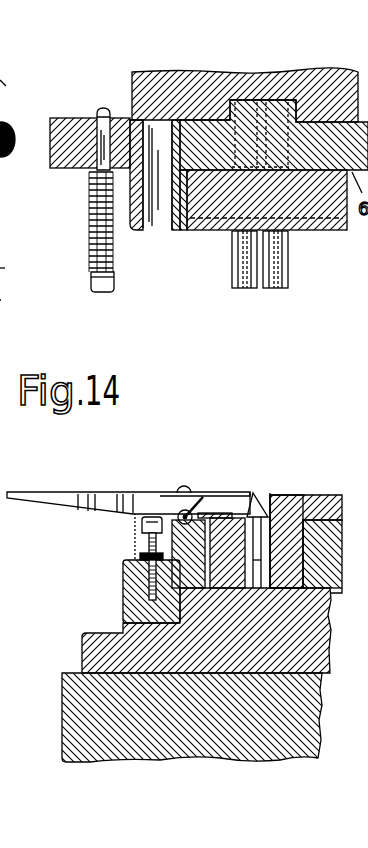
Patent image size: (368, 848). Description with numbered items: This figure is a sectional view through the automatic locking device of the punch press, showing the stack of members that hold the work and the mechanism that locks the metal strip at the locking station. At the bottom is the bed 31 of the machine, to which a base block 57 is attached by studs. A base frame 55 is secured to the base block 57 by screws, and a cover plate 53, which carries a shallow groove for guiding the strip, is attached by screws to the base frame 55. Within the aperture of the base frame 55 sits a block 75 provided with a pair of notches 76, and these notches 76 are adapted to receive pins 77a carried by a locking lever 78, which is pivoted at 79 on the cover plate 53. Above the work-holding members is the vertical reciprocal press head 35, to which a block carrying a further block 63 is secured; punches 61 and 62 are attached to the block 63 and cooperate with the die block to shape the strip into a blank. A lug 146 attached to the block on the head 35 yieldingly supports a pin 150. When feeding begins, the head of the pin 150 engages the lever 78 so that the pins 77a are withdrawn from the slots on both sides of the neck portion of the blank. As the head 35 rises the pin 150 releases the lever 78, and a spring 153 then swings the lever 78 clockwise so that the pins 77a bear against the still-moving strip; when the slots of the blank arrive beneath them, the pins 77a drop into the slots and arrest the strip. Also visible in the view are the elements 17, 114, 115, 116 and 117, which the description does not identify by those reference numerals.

The member 17 is at (11, 73).
The member 115 is at (25, 97).
The arm 114 is at (13, 215).
The member 117 is at (19, 269).
The member 116 is at (18, 295).
The lug 146 is at (72, 128).
The press head 35 is at (338, 52).
The block 63 is at (200, 217).
The punch 62 is at (233, 257).
The punch 61 is at (290, 262).
The pin 150 is at (110, 286).
The locking lever 78 is at (37, 492).
The pivot 79 is at (198, 498).
The pins 77a is at (253, 493).
The block 75 is at (283, 527).
The cover plate 53 is at (338, 476).
The base frame 55 is at (337, 542).
The notches 76 is at (265, 555).
The spring 153 is at (135, 528).
The base block 57 is at (97, 642).
The bed 31 is at (77, 721).